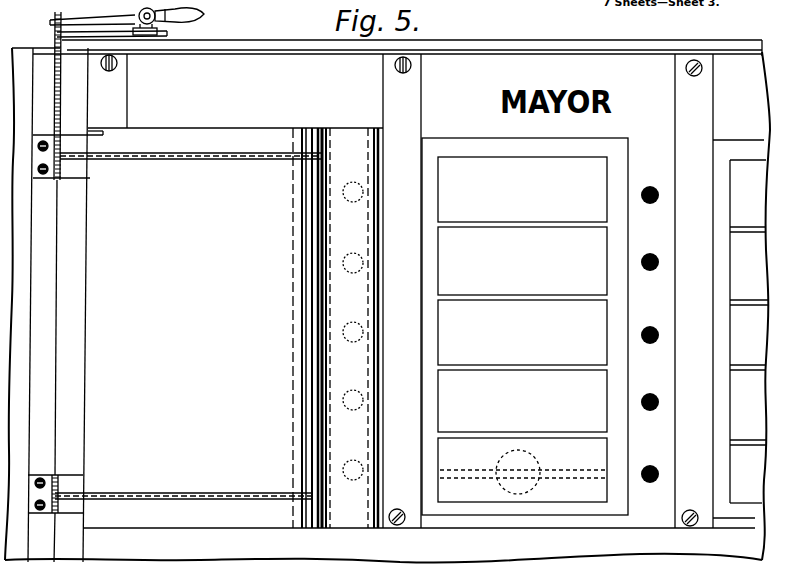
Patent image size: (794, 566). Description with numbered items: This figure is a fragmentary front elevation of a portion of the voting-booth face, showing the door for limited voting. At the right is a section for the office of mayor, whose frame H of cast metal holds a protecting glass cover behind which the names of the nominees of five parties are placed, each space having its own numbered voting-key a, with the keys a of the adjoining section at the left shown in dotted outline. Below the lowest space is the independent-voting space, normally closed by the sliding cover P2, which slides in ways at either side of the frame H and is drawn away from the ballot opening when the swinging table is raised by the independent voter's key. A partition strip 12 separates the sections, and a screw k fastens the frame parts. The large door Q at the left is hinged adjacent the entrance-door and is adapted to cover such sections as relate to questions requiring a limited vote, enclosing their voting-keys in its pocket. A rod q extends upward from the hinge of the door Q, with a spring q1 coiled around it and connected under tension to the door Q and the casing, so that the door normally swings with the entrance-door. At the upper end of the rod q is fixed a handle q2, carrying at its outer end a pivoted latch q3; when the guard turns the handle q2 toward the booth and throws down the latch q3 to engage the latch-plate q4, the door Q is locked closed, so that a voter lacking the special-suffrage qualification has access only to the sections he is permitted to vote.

The rod q is at (53, 30).
The spring q1 is at (60, 85).
The handle q2 is at (62, 25).
The latch q3 is at (204, 16).
The latch-plate q4 is at (167, 34).
The frame H is at (266, 98).
The partition strip 12 is at (402, 291).
The door Q is at (190, 328).
The voting keys a is at (364, 192).
The fastening screw k is at (690, 509).
The sliding cover P2 is at (581, 497).